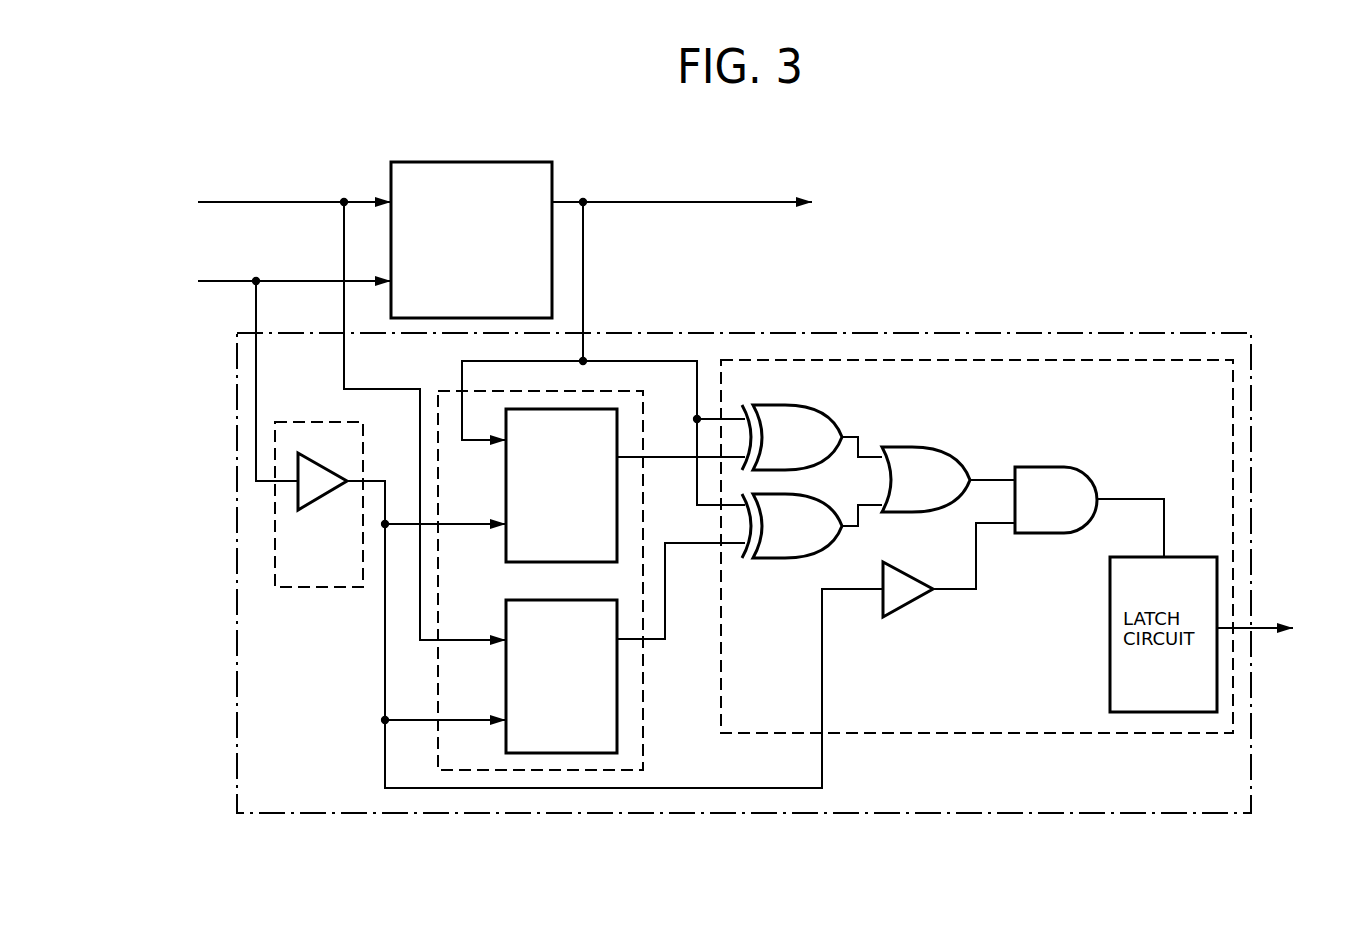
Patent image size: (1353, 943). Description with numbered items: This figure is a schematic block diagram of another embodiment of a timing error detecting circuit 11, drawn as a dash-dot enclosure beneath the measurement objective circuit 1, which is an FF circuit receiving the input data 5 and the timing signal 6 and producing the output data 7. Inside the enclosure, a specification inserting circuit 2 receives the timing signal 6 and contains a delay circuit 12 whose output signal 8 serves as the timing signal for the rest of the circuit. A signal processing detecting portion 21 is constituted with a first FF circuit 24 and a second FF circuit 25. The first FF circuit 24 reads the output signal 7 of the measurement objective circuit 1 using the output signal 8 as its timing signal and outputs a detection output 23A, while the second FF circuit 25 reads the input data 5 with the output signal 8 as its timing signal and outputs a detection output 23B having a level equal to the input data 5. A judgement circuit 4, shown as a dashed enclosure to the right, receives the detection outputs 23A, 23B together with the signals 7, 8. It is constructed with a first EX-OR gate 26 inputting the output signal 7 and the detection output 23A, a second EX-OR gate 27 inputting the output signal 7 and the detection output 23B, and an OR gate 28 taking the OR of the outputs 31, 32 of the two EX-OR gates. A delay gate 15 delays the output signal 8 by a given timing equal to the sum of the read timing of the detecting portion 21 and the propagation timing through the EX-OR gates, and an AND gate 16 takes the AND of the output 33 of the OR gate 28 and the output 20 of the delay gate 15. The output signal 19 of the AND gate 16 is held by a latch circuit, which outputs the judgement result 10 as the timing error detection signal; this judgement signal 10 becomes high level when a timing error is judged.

The measurement objective circuit 1 is at (518, 162).
The specification inserting circuit 2 is at (319, 475).
The judgement circuit 4 is at (1128, 733).
The input data 5 is at (230, 202).
The timing signal 6 is at (228, 281).
The output data 7 is at (641, 200).
The output signal 8 is at (385, 660).
The judgement result 10 is at (1267, 625).
The timing error detecting circuit 11 is at (1113, 333).
The delay circuit 12 is at (325, 497).
The delay gate 15 is at (915, 603).
The AND gate 16 is at (1068, 467).
The output signal of the AND gate 19 is at (1132, 497).
The output of the delay gate 20 is at (976, 560).
The signal processing detecting portion 21 is at (658, 631).
The detection output 23A is at (665, 462).
The detection output 23B is at (680, 545).
The first FF circuit 24 is at (506, 474).
The second FF circuit 25 is at (506, 674).
The first EX-OR gate 26 is at (789, 405).
The second EX-OR gate 27 is at (775, 558).
The OR gate 28 is at (930, 447).
The output of the first EX-OR gate 31 is at (855, 437).
The output of the second EX-OR gate 32 is at (851, 530).
The output of the OR gate 33 is at (992, 478).